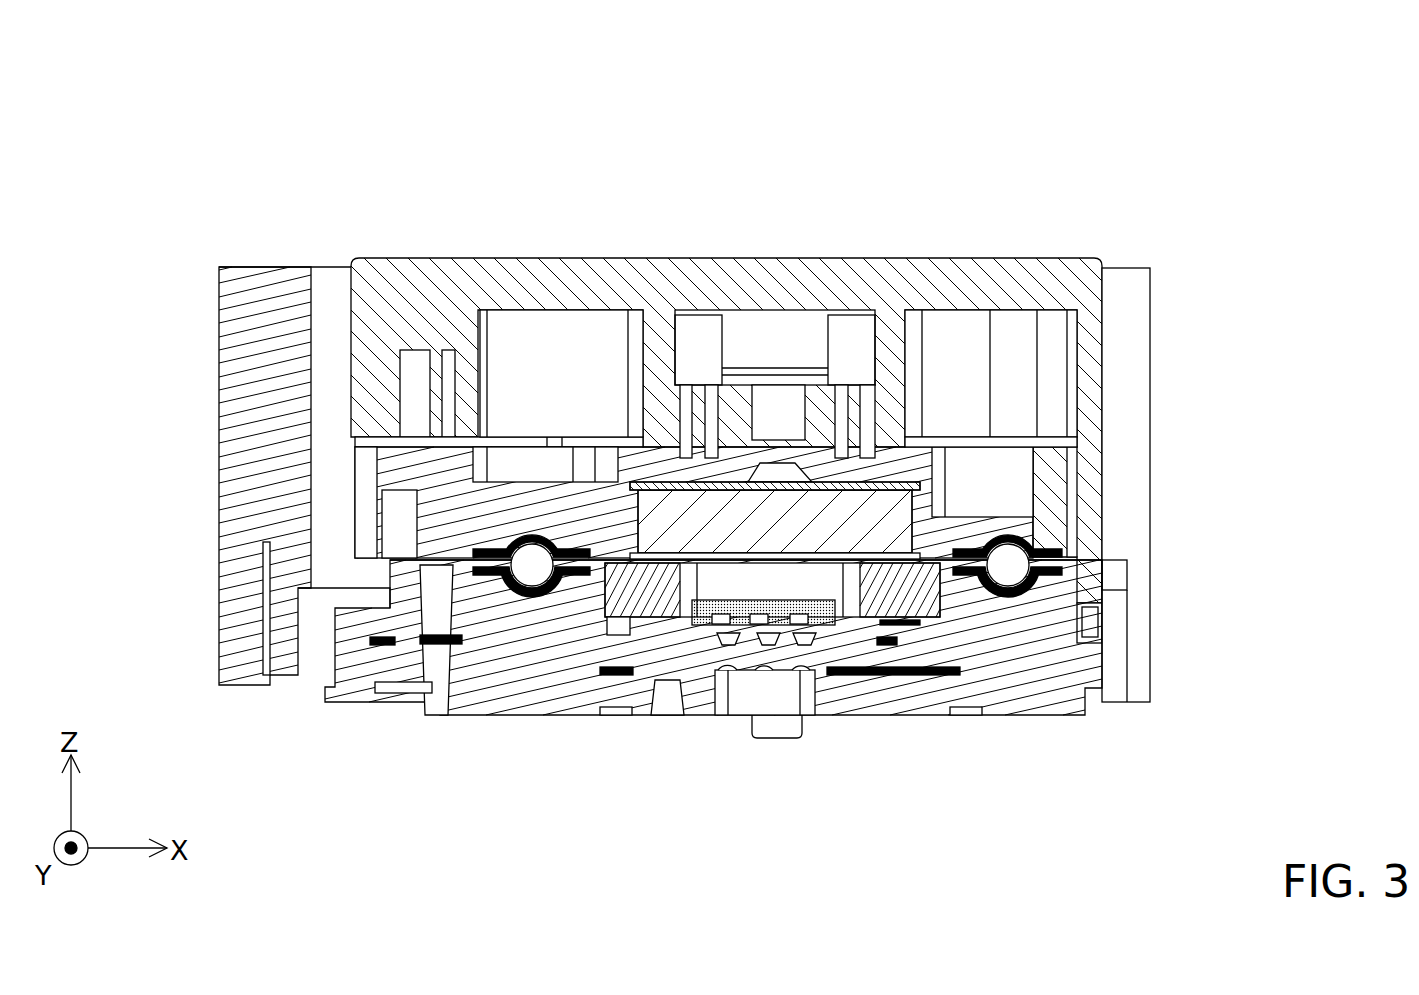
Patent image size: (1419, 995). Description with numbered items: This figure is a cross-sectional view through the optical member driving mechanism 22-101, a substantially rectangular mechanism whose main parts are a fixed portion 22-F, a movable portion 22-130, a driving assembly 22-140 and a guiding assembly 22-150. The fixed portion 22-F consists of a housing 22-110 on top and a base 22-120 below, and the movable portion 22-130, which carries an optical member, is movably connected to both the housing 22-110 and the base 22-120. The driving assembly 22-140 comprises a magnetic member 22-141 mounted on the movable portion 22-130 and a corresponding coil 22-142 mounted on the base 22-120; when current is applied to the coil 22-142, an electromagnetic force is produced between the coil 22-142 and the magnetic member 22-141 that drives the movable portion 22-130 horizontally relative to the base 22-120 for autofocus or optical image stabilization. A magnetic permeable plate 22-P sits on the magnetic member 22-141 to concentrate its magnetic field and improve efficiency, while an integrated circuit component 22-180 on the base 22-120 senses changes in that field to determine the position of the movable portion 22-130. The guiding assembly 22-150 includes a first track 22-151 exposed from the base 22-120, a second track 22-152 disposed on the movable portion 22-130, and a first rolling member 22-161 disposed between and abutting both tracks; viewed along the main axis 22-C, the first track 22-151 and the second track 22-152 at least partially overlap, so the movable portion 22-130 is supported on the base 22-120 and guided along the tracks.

The optical member driving mechanism 22-101 is at (205, 57).
The housing 22-110 is at (612, 284).
The base 22-120 is at (525, 675).
The fixed portion 22-F is at (1262, 78).
The movable portion 22-130 is at (885, 345).
The driving assembly 22-140 is at (1262, 170).
The magnetic member 22-141 is at (843, 523).
The coil 22-142 is at (905, 620).
The guiding assembly 22-150 is at (1290, 545).
The first track 22-151 is at (1045, 588).
The second track 22-152 is at (1045, 548).
The first rolling member 22-161 is at (1018, 568).
The integrated circuit component 22-180 is at (712, 615).
The magnetic permeable plate 22-P is at (918, 490).
The main axis 22-C is at (785, 830).